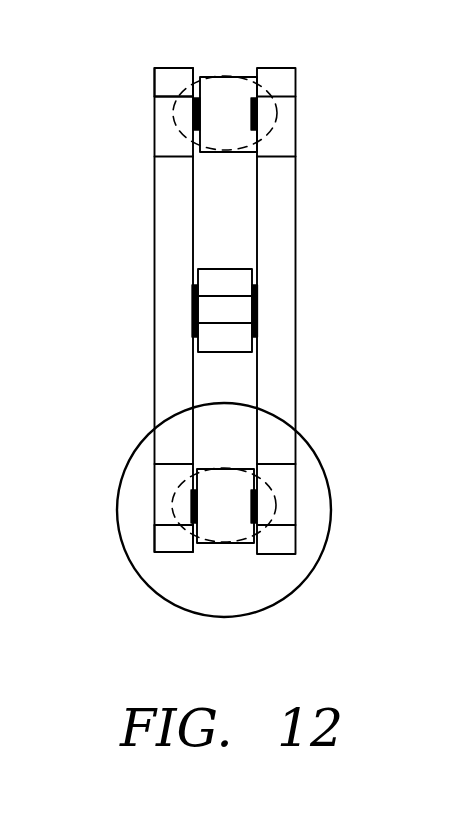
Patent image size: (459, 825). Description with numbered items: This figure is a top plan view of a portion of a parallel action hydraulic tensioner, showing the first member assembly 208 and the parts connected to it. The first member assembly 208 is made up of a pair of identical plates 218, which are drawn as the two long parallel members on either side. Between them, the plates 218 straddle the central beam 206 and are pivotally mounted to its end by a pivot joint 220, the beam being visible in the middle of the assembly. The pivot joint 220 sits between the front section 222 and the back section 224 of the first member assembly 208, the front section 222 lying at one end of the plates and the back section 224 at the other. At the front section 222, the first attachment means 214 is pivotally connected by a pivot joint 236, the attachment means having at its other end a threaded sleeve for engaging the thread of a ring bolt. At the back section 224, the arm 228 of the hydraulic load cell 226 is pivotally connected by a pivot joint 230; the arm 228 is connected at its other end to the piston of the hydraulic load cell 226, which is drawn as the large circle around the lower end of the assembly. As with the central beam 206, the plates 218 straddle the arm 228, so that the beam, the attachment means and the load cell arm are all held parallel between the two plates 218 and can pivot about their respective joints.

The central beam 206 is at (252, 277).
The first member assembly 208 is at (223, 319).
The first attachment means 214 is at (262, 82).
The plates 218 is at (295, 224).
The pivot joint 220 is at (257, 312).
The front section 222 is at (170, 67).
The back section 224 is at (172, 550).
The hydraulic load cell 226 is at (311, 442).
The arm 228 is at (233, 543).
The pivot joint 230 is at (257, 503).
The pivot joint 236 is at (258, 117).